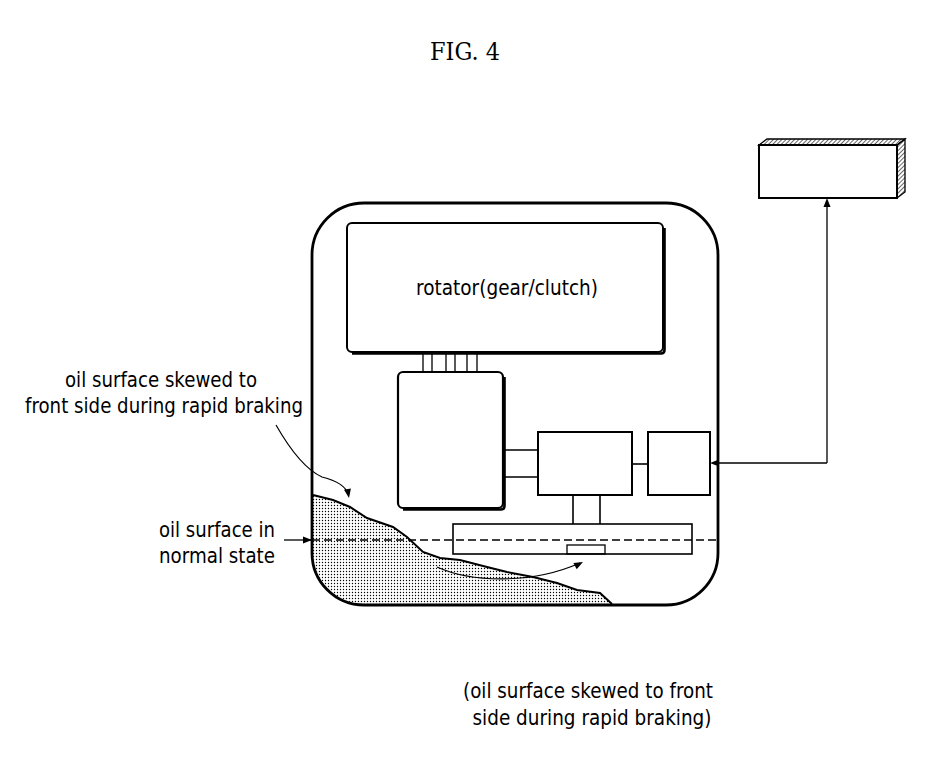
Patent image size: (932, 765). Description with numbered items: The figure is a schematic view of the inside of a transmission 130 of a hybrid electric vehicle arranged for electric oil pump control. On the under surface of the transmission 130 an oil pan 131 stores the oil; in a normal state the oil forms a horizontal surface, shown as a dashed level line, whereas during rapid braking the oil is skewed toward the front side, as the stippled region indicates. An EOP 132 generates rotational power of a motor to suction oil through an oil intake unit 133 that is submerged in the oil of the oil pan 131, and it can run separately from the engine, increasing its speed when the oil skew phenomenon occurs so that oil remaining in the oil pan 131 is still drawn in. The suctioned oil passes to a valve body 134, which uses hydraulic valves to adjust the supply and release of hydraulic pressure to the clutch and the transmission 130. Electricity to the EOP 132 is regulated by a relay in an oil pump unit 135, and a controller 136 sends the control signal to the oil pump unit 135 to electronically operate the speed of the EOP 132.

The transmission 130 is at (412, 198).
The oil pan 131 is at (418, 605).
The EOP 132 is at (588, 432).
The oil intake unit 133 is at (593, 558).
The valve body 134 is at (397, 406).
The oil pump unit 135 is at (677, 432).
The controller 136 is at (828, 140).